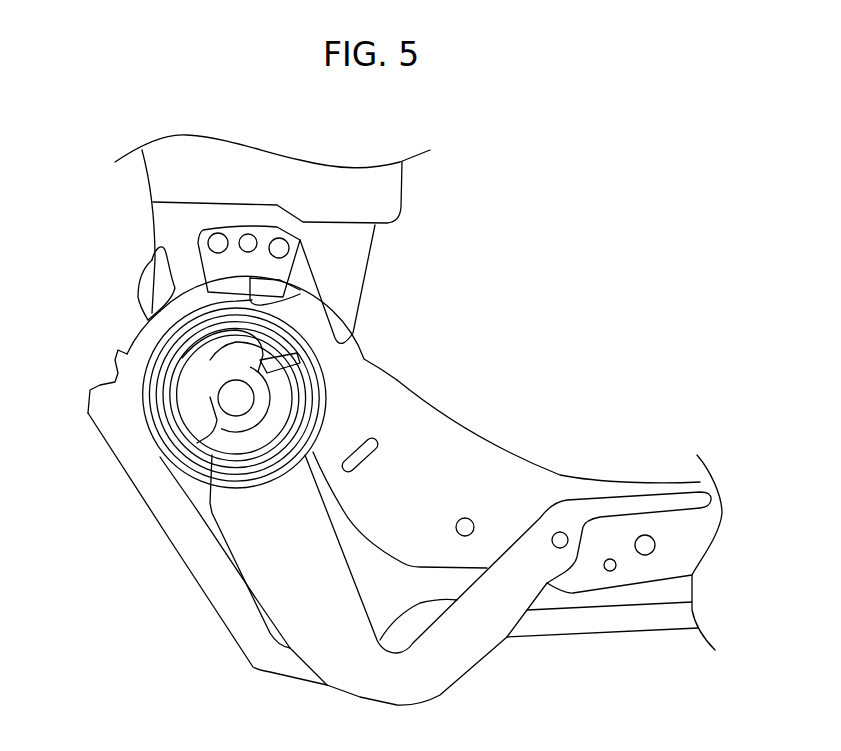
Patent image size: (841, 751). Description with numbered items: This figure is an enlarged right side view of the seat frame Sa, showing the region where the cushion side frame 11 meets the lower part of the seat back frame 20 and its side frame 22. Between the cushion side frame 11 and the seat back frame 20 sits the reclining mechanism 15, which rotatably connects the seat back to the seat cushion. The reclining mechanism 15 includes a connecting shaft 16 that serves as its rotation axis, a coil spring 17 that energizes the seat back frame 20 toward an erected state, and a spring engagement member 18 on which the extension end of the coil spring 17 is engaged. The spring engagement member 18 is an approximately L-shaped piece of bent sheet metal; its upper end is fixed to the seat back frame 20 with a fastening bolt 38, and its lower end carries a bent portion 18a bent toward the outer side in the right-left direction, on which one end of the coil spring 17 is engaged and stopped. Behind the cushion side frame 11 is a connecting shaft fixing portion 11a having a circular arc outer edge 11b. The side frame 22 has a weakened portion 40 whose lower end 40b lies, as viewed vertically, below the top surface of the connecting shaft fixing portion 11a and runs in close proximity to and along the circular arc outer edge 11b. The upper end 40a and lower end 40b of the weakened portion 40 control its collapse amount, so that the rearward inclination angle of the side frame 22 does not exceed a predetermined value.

The seat frame Sa is at (270, 206).
The cushion side frame 11 is at (376, 501).
The connecting shaft fixing portion 11a is at (137, 360).
The circular arc outer edge 11b is at (140, 333).
The reclining mechanism 15 is at (147, 443).
The connecting shaft 16 is at (237, 400).
The coil spring 17 is at (397, 378).
The spring engagement member 18 is at (359, 284).
The bent portion 18a is at (300, 298).
The seat back frame 20 is at (407, 182).
The side frame 22 is at (158, 178).
The fastening bolt 38 is at (280, 247).
The weakened portion 40 is at (107, 261).
The upper end 40a is at (163, 257).
The lower end 40b is at (162, 290).